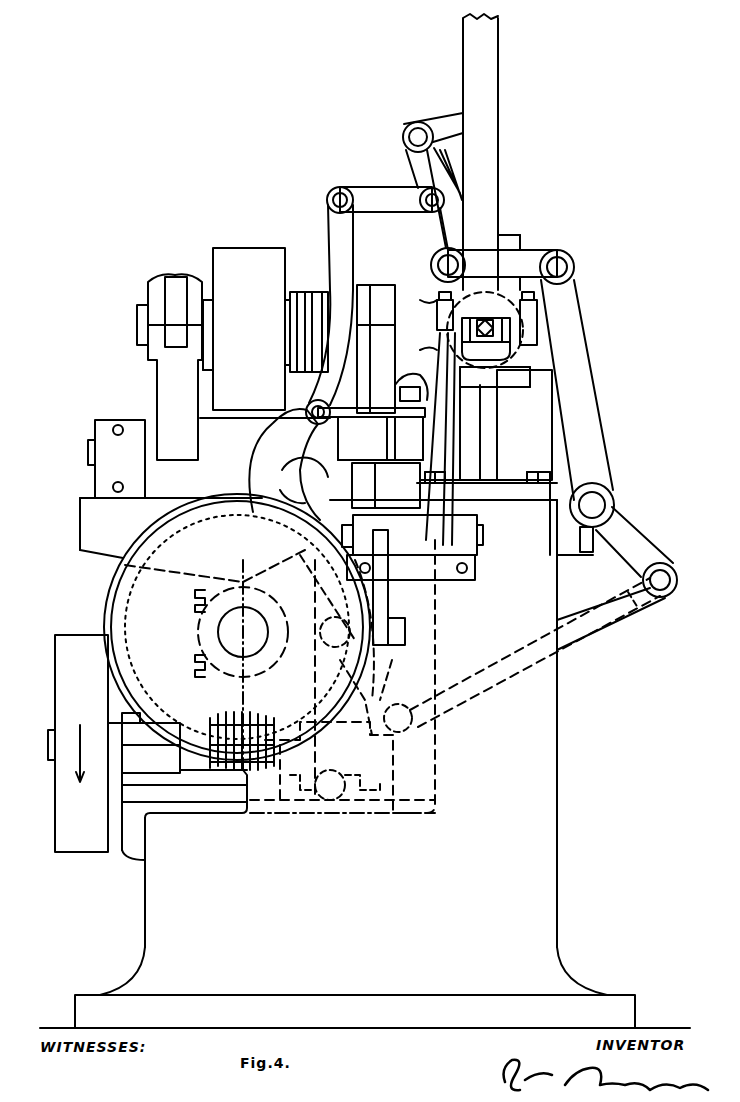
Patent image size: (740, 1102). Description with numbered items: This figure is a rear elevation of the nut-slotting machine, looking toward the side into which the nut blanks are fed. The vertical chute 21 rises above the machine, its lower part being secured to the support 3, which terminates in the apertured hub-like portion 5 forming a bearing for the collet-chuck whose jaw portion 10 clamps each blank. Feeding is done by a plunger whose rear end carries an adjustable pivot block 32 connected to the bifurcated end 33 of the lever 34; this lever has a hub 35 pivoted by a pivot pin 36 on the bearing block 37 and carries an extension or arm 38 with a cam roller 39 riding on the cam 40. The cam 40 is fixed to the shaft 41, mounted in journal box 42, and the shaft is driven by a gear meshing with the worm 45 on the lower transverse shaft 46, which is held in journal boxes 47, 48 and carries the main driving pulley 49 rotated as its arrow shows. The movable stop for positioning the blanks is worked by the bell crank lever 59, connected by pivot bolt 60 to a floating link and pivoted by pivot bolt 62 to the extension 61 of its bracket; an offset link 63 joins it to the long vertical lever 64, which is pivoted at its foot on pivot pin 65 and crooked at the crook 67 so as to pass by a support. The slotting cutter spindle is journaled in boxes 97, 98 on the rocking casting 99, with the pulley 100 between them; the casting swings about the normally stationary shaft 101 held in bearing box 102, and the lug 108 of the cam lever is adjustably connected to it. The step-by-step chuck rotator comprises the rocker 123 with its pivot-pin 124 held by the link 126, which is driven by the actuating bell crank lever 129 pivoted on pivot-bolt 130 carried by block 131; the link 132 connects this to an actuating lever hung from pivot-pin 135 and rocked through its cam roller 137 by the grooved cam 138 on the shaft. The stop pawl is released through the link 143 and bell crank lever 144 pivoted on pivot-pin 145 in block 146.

The support 3 is at (365, 699).
The hub-like portion 5 is at (528, 318).
The contracting or jaw portion 10 is at (405, 385).
The vertical chute 21 is at (480, 152).
The pivot block 32 is at (485, 330).
The bifurcated end 33 is at (495, 377).
The lever 34 is at (441, 506).
The hub 35 is at (409, 535).
The pivot pin 36 is at (483, 537).
The bearing block 37 is at (411, 567).
The extension or arm 38 is at (391, 587).
The cam roller 39 is at (366, 693).
The cam 40 is at (237, 632).
The shaft 41 is at (243, 632).
The journal box 42 is at (210, 666).
The worm 45 is at (242, 733).
The lower transverse shaft 46 is at (48, 745).
The journal box 47 is at (385, 752).
The journal box 48 is at (177, 786).
The main driving pulley 49 is at (81, 743).
The bell crank lever 59 is at (445, 118).
The pivot bolt 60 is at (335, 787).
The extension 61 is at (436, 200).
The pivot bolt 62 is at (412, 134).
The offset link 63 is at (368, 192).
The long vertical lever 64 is at (342, 502).
The pivot pin 65 is at (342, 821).
The crook 67 is at (286, 470).
The box 97 is at (375, 349).
The box 98 is at (169, 367).
The rocking frame or casting 99 is at (274, 376).
The pulley 100 is at (265, 333).
The shaft 101 is at (88, 450).
The bearing box 102 is at (128, 420).
The lug 108 is at (411, 438).
The rocker 123 is at (440, 290).
The pivot-pin 124 is at (442, 253).
The link 126 is at (537, 257).
The actuating bell crank lever 129 is at (594, 417).
The pivot-bolt 130 is at (600, 504).
The block 131 is at (576, 552).
The link 132 is at (512, 660).
The pivot-pin 135 is at (284, 464).
The cam roller 137 is at (337, 677).
The cam 138 is at (151, 620).
The link 143 is at (371, 434).
The bell crank lever 144 is at (314, 404).
The pivot-pin 145 is at (293, 560).
The block 146 is at (352, 489).